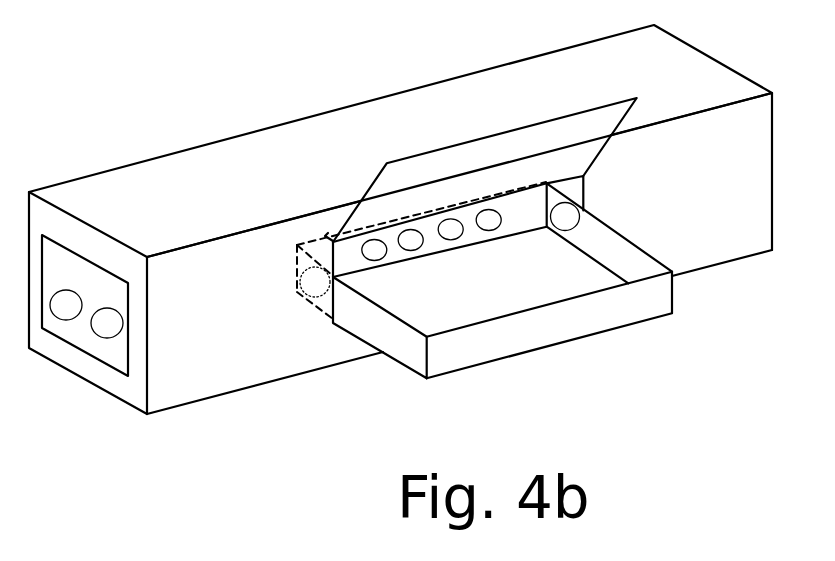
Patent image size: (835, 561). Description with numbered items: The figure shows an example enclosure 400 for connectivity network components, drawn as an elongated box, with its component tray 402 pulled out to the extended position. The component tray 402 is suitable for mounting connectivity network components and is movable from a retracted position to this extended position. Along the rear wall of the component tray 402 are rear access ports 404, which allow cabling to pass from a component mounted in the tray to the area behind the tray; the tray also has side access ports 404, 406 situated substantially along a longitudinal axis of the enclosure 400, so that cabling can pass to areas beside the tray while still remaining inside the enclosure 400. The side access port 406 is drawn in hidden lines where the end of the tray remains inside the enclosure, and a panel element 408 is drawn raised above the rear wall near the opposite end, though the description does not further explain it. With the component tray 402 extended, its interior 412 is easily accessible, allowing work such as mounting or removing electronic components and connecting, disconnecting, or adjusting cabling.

The enclosure 400 is at (183, 76).
The component tray 402 is at (417, 365).
The rear access ports 404 is at (454, 213).
The side access port 406 is at (308, 282).
The cover flap 408 is at (567, 212).
The interior 412 is at (570, 280).